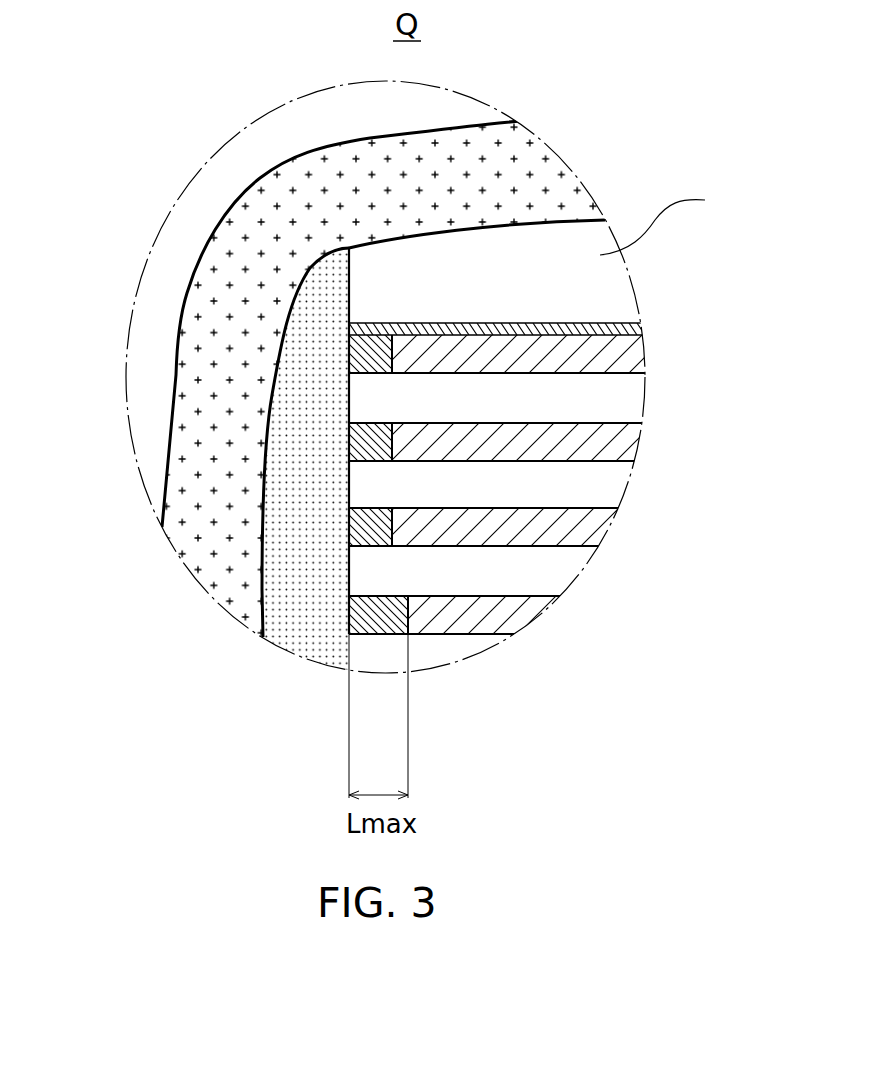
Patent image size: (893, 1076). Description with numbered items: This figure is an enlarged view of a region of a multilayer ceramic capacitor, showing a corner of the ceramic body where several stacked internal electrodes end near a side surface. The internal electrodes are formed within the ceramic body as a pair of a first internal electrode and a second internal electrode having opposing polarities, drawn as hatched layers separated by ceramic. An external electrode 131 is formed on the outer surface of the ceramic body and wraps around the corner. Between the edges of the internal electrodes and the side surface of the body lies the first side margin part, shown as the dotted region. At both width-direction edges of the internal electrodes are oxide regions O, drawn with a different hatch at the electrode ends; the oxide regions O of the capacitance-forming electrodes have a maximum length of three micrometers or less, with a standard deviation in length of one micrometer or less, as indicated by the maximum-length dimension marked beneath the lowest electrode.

The external electrode 131 is at (187, 488).
The oxide region O is at (347, 622).